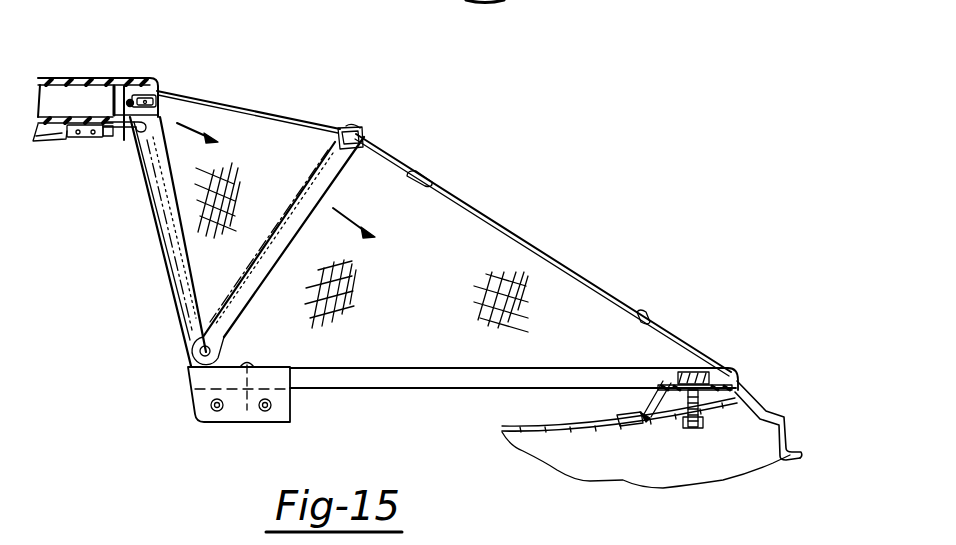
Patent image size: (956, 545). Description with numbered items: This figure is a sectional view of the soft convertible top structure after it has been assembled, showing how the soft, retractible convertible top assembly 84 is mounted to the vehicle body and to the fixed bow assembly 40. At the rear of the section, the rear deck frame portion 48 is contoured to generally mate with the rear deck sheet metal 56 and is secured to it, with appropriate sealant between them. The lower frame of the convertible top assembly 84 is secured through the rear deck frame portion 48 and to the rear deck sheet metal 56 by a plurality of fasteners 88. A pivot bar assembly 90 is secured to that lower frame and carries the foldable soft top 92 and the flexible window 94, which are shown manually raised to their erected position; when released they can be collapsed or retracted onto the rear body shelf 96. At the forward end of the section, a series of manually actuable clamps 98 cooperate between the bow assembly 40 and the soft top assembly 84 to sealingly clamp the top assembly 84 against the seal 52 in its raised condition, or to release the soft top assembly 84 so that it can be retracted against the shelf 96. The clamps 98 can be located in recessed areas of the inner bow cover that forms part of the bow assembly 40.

The bow assembly 40 is at (123, 25).
The seal 52 is at (131, 92).
The soft, retractible convertible top assembly 84 is at (337, 52).
The foldable soft top 92 is at (320, 127).
The flexible window 94 is at (500, 228).
The fasteners 88 is at (692, 372).
The pivot bar assembly 90 is at (197, 406).
The rear deck frame portion 48 is at (647, 401).
The rear deck sheet metal 56 is at (598, 432).
The rear body shelf 96 is at (518, 427).
The manually actuable clamps 98 is at (102, 132).